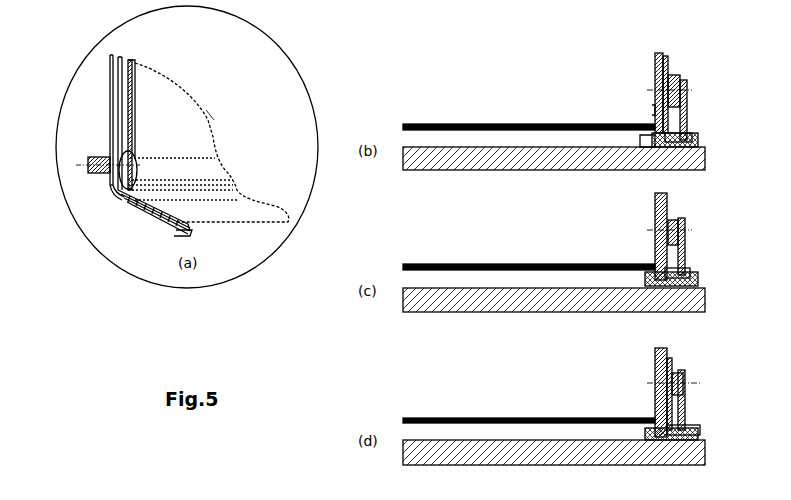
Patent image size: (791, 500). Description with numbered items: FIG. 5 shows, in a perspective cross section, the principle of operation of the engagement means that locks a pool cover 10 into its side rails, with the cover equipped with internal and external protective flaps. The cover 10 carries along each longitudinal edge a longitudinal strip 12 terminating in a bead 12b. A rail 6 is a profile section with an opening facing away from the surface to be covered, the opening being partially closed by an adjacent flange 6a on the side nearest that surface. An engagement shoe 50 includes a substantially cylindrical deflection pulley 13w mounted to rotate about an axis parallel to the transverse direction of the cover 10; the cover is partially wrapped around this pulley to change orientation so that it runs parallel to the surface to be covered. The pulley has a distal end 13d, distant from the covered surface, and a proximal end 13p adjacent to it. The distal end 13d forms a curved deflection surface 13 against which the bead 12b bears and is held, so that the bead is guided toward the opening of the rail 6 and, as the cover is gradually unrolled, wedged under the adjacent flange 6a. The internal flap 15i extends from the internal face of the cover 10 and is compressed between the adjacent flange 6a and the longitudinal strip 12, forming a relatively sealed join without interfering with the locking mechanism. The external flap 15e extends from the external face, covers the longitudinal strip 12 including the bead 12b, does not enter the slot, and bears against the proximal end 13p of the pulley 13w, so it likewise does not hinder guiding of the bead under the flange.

The cover 10 is at (202, 95).
The longitudinal strip 12 is at (160, 226).
The bead 12b is at (136, 63).
The deflection surface 13 is at (91, 213).
The distal end 13d is at (116, 201).
The proximal end 13p is at (213, 143).
The deflection pulley 13w is at (122, 145).
The external flap 15e is at (654, 110).
The internal flap 15i is at (176, 236).
The engagement shoe 50 is at (686, 237).
The rail 6 is at (700, 133).
The adjacent flange 6a is at (657, 148).